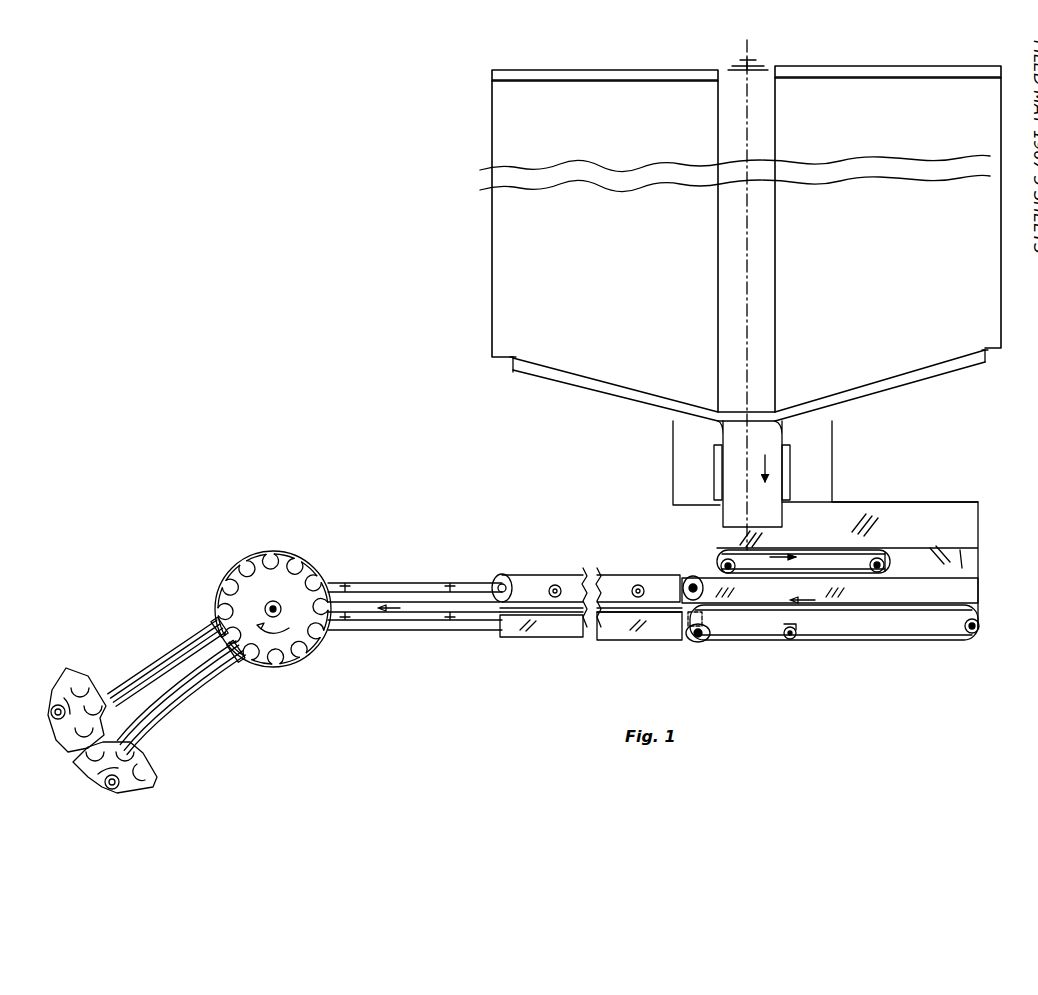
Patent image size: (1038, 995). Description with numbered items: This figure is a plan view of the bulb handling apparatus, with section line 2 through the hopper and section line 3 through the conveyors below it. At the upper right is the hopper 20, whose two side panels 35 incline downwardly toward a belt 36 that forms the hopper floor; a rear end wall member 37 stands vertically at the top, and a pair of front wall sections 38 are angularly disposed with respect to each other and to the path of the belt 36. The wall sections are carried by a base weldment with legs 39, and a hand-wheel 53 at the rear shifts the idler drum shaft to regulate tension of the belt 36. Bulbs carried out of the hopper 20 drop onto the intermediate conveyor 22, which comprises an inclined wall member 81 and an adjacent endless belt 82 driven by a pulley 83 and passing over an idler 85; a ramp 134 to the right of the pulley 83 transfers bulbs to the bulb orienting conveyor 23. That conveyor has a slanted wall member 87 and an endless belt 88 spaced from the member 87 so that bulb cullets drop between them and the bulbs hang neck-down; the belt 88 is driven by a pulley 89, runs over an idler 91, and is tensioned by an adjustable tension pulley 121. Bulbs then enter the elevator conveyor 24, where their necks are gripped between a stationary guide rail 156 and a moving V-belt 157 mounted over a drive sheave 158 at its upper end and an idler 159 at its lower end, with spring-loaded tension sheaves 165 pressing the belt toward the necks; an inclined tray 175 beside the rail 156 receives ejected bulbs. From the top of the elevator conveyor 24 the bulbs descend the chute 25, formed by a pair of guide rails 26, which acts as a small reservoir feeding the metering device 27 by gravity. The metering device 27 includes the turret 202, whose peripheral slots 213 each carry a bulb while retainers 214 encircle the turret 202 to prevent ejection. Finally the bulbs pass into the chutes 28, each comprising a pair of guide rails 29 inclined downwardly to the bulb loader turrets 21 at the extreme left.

The hopper 20 is at (908, 398).
The bulb loader turrets 21 is at (82, 664).
The intermediate conveyor 22 is at (878, 486).
The bulb orienting conveyor 23 is at (856, 656).
The elevator conveyor 24 is at (558, 528).
The chute 25 is at (428, 654).
The guide rails 26 is at (420, 630).
The metering device 27 is at (290, 670).
The chutes 28 is at (130, 632).
The guide rails 29 is at (216, 632).
The side panels 35 is at (636, 293).
The belt 36 is at (776, 293).
The rear end wall member 37 is at (895, 82).
The front wall sections 38 is at (610, 372).
The legs 39 is at (511, 364).
The hand-wheel 53 is at (758, 66).
The inclined wall member 81 is at (948, 535).
The endless belt 82 is at (838, 550).
The pulley 83 is at (878, 570).
The idler 85 is at (720, 560).
The slanted wall member 87 is at (777, 598).
The endless belt 88 is at (885, 640).
The pulley 89 is at (965, 630).
The idler 91 is at (706, 642).
The adjustable tension pulley 121 is at (794, 640).
The ramp 134 is at (922, 573).
The guide rail 156 is at (608, 615).
The V-belt 157 is at (545, 575).
The drive sheave 158 is at (495, 575).
The idler 159 is at (686, 578).
The tension sheaves 165 is at (636, 585).
The inclined tray 175 is at (542, 636).
The turret 202 is at (290, 599).
The slots 213 is at (298, 562).
The retainers 214 is at (240, 563).
The section line 2 is at (745, 68).
The section line 3 is at (988, 648).